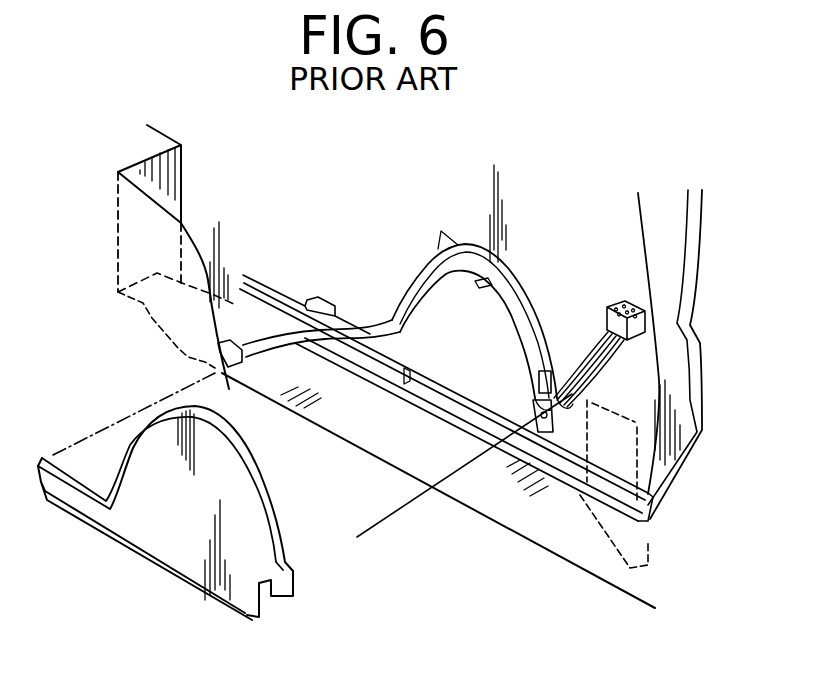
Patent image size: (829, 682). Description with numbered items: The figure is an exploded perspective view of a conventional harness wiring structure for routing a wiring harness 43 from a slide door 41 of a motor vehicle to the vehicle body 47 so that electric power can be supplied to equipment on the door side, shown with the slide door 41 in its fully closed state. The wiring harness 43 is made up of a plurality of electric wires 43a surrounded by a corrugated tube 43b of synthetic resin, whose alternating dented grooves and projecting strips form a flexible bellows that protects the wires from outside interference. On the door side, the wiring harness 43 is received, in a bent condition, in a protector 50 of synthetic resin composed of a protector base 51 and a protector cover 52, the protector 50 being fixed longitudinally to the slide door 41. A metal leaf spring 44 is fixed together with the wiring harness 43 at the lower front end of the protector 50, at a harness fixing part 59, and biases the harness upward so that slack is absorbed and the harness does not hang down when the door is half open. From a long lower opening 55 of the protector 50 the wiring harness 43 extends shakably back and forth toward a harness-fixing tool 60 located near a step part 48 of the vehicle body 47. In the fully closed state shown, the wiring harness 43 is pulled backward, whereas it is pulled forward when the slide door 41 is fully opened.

The slide door 41 is at (702, 443).
The wiring harness 43 is at (420, 313).
The electric wires 43a is at (600, 362).
The corrugated tube 43b is at (520, 280).
The leaf spring 44 is at (527, 290).
The vehicle body 47 is at (186, 183).
The step part 48 is at (442, 456).
The protector 50 is at (461, 591).
The protector base 51 is at (398, 390).
The protector cover 52 is at (286, 492).
The long lower opening 55 is at (438, 379).
The harness fixing part 59 is at (538, 382).
The harness-fixing tool 60 is at (228, 341).